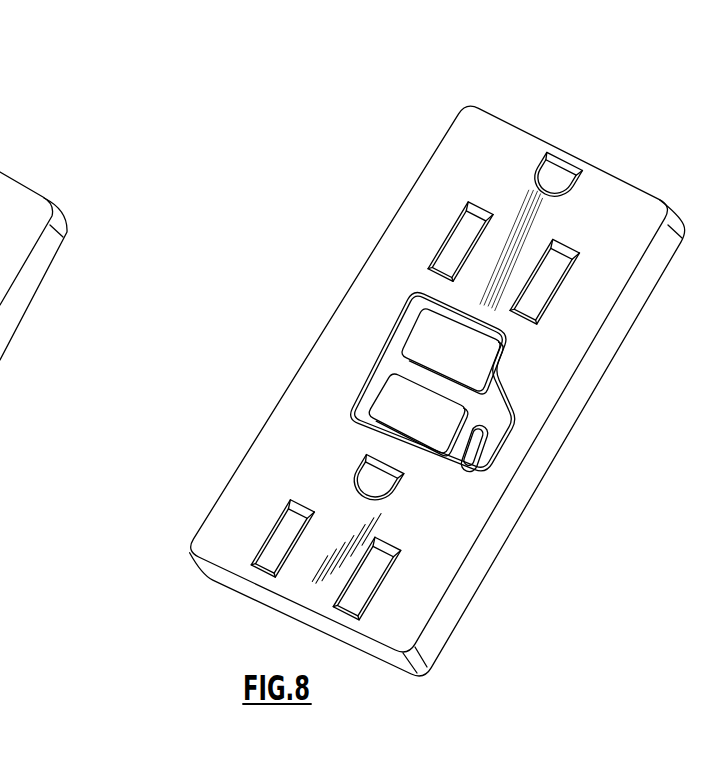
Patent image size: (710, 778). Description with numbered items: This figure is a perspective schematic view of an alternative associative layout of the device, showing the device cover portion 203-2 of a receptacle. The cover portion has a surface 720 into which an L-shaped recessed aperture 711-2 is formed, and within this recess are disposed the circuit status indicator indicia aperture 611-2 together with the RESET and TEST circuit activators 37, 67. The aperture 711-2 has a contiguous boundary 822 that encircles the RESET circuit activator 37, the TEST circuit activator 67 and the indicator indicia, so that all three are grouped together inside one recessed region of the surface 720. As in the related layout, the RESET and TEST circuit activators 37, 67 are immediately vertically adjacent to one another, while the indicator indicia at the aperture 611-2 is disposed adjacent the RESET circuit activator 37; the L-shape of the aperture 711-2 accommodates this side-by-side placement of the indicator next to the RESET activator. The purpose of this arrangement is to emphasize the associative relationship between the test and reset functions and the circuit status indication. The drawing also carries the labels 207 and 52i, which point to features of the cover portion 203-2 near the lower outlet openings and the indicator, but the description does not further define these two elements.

The device cover portion 203-2 is at (390, 89).
The surface 720 is at (550, 323).
The lower outlet 207 is at (393, 577).
The L-shaped recessed aperture 711-2 is at (385, 358).
The RESET circuit activator 37 is at (352, 424).
The TEST circuit activator 67 is at (423, 332).
The contiguous boundary 822 is at (360, 397).
The circuit status indicator indicia aperture 611-2 is at (487, 442).
The indicator light 52i is at (480, 458).